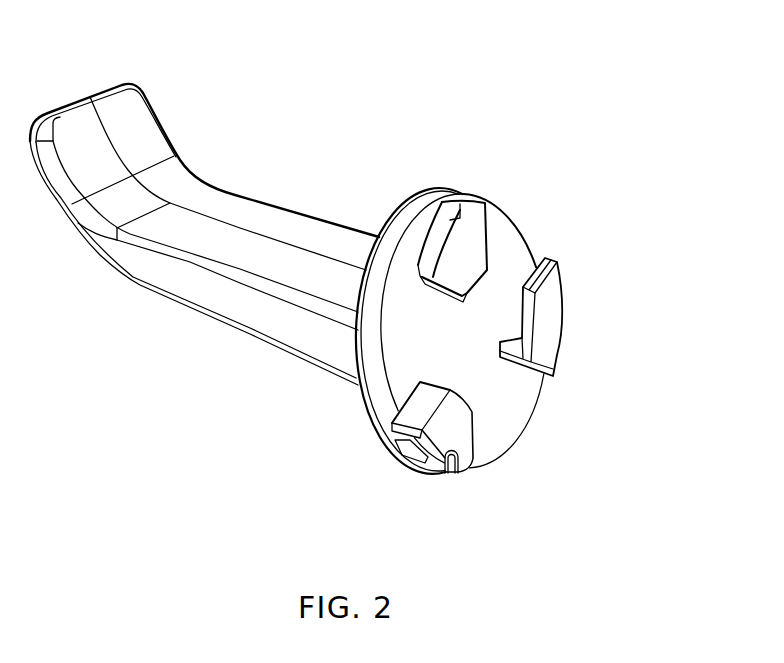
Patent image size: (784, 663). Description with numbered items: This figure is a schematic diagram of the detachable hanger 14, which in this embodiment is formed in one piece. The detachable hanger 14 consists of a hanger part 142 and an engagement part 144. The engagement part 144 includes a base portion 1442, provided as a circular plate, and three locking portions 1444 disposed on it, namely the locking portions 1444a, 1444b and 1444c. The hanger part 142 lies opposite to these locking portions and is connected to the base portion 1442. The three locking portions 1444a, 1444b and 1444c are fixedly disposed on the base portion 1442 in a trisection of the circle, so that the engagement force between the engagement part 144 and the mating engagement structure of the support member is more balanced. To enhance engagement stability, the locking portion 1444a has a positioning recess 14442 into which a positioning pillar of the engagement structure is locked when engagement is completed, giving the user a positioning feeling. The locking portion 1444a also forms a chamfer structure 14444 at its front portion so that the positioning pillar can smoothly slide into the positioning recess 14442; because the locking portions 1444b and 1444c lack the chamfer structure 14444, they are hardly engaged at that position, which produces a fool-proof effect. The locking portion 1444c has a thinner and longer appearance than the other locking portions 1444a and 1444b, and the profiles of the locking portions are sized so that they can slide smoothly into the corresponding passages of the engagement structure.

The detachable hanger 14 is at (668, 80).
The hanger part 142 is at (259, 206).
The engagement part 144 is at (712, 135).
The base portion 1442 is at (498, 215).
The locking portions 1444 is at (641, 220).
The locking portion 1444a is at (462, 430).
The locking portion 1444b is at (473, 245).
The locking portion 1444c is at (548, 315).
The positioning recess 14442 is at (442, 479).
The chamfer structure 14444 is at (476, 474).